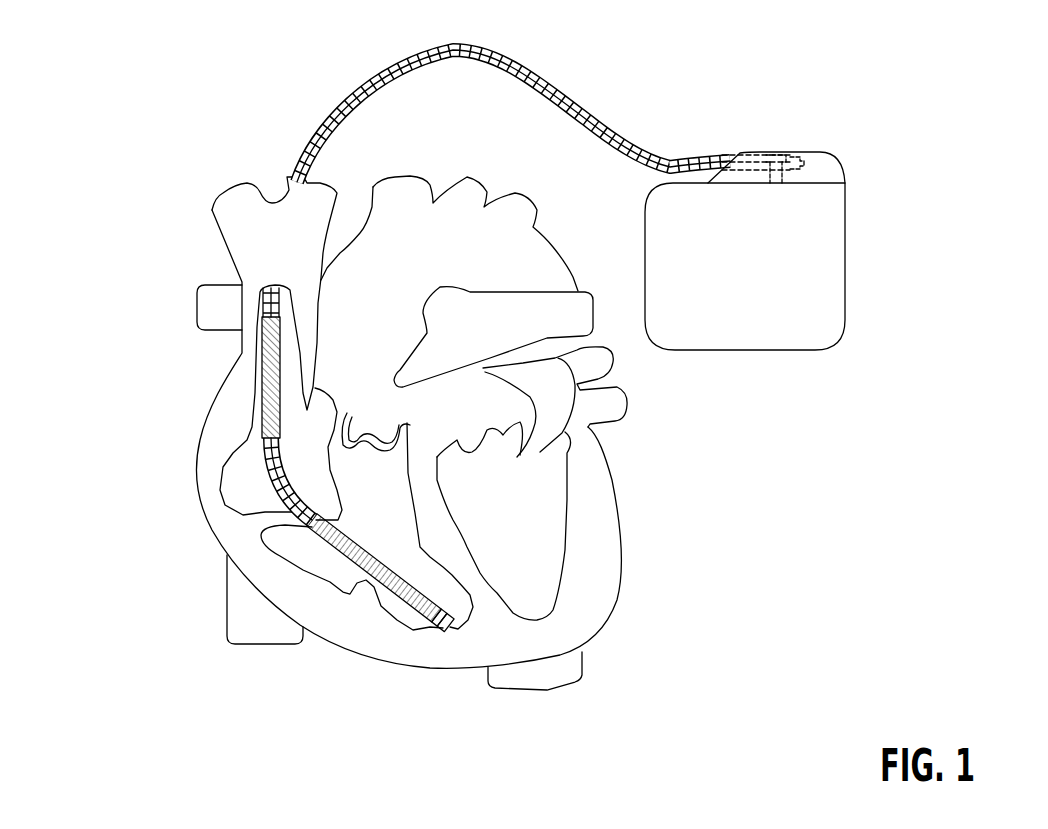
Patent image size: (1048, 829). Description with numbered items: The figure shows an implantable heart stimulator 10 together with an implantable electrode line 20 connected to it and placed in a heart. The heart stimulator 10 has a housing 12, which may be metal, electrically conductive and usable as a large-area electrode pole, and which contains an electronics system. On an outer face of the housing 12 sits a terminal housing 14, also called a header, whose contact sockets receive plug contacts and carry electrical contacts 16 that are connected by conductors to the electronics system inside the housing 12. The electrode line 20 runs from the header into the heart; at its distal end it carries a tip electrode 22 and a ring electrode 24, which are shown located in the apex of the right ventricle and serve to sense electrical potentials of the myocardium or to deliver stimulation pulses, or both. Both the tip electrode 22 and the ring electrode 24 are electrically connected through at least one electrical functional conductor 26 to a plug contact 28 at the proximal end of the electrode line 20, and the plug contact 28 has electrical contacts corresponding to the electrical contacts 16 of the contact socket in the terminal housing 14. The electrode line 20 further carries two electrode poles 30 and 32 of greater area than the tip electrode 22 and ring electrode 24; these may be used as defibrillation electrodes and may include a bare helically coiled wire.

The implantable heart stimulator 10 is at (930, 317).
The housing 12 is at (748, 332).
The terminal housing 14 is at (822, 160).
The electrical contacts 16 is at (802, 154).
The implantable electrode line 20 is at (493, 103).
The tip electrode 22 is at (450, 629).
The ring electrode 24 is at (420, 618).
The electrical functional conductor 26 is at (384, 64).
The plug contact 28 is at (763, 155).
The electrode pole 30 is at (323, 540).
The electrode pole 32 is at (262, 380).